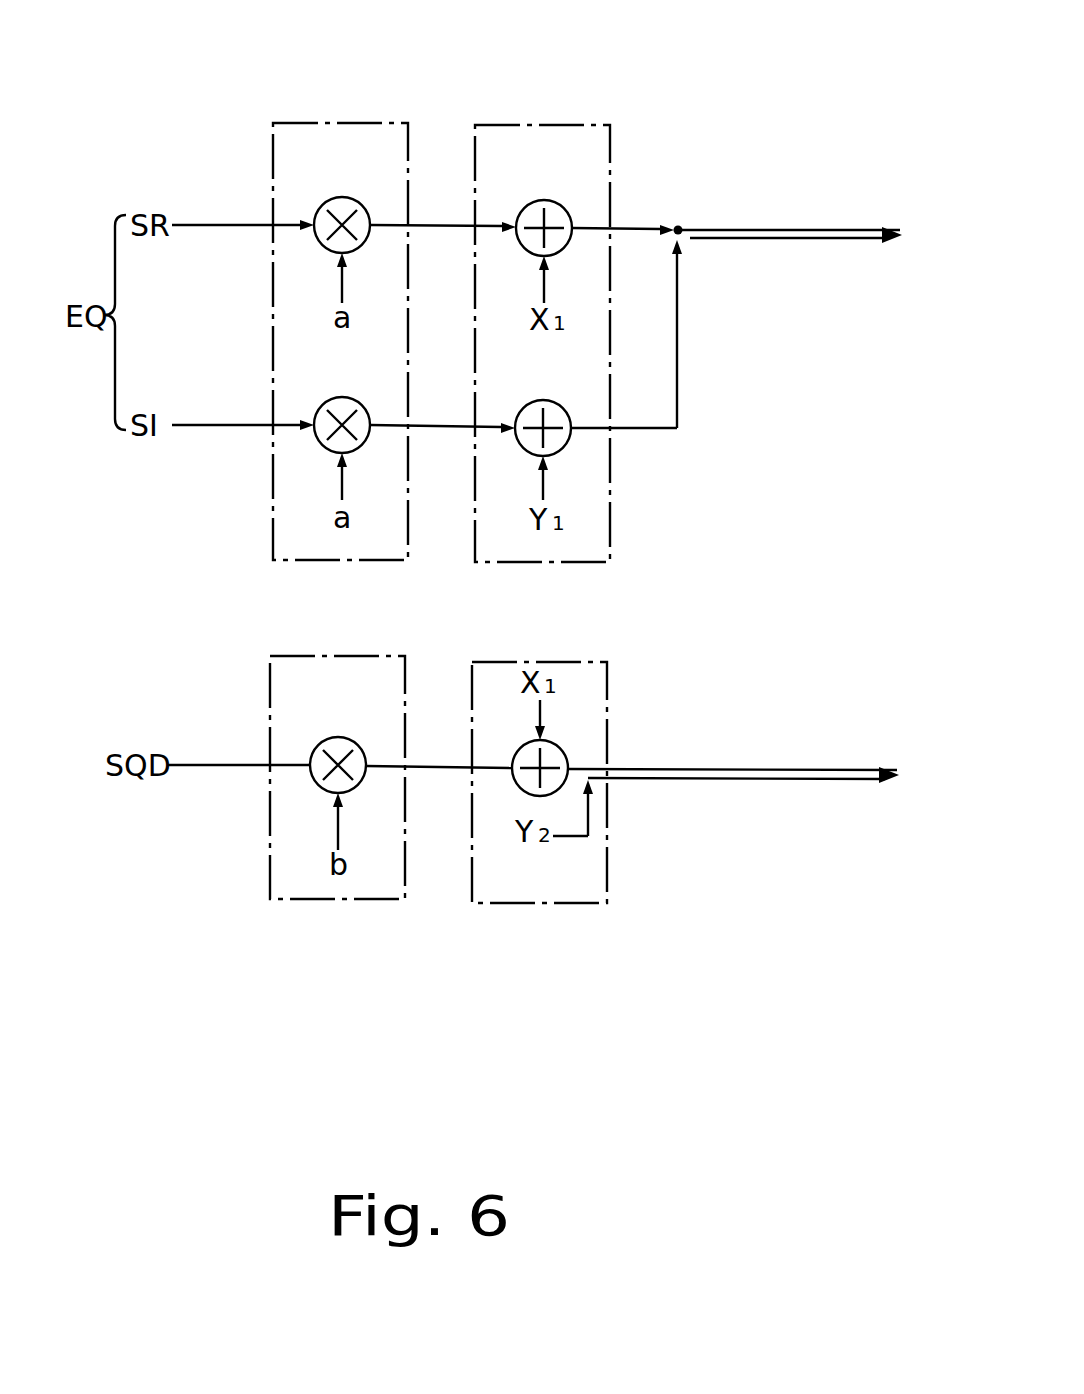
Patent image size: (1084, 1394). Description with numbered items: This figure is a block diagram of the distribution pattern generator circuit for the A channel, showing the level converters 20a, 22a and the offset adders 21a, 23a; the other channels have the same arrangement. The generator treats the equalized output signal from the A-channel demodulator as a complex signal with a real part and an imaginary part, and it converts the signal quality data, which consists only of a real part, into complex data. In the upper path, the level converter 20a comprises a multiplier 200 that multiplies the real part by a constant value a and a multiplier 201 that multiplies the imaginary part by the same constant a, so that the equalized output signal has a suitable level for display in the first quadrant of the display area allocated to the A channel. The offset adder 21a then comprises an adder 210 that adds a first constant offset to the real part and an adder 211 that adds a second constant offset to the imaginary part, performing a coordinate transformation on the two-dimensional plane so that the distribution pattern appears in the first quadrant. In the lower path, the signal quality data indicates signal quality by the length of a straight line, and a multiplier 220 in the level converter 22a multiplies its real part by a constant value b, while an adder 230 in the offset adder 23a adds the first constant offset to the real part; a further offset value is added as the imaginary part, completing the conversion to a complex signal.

The level converter 20a is at (335, 47).
The offset adder 21a is at (543, 121).
The level converter 22a is at (304, 912).
The offset adder 23a is at (602, 918).
The multiplier 200 is at (345, 197).
The multiplier 201 is at (356, 382).
The adder 210 is at (550, 200).
The adder 211 is at (552, 401).
The multiplier 220 is at (343, 738).
The adder 230 is at (558, 746).